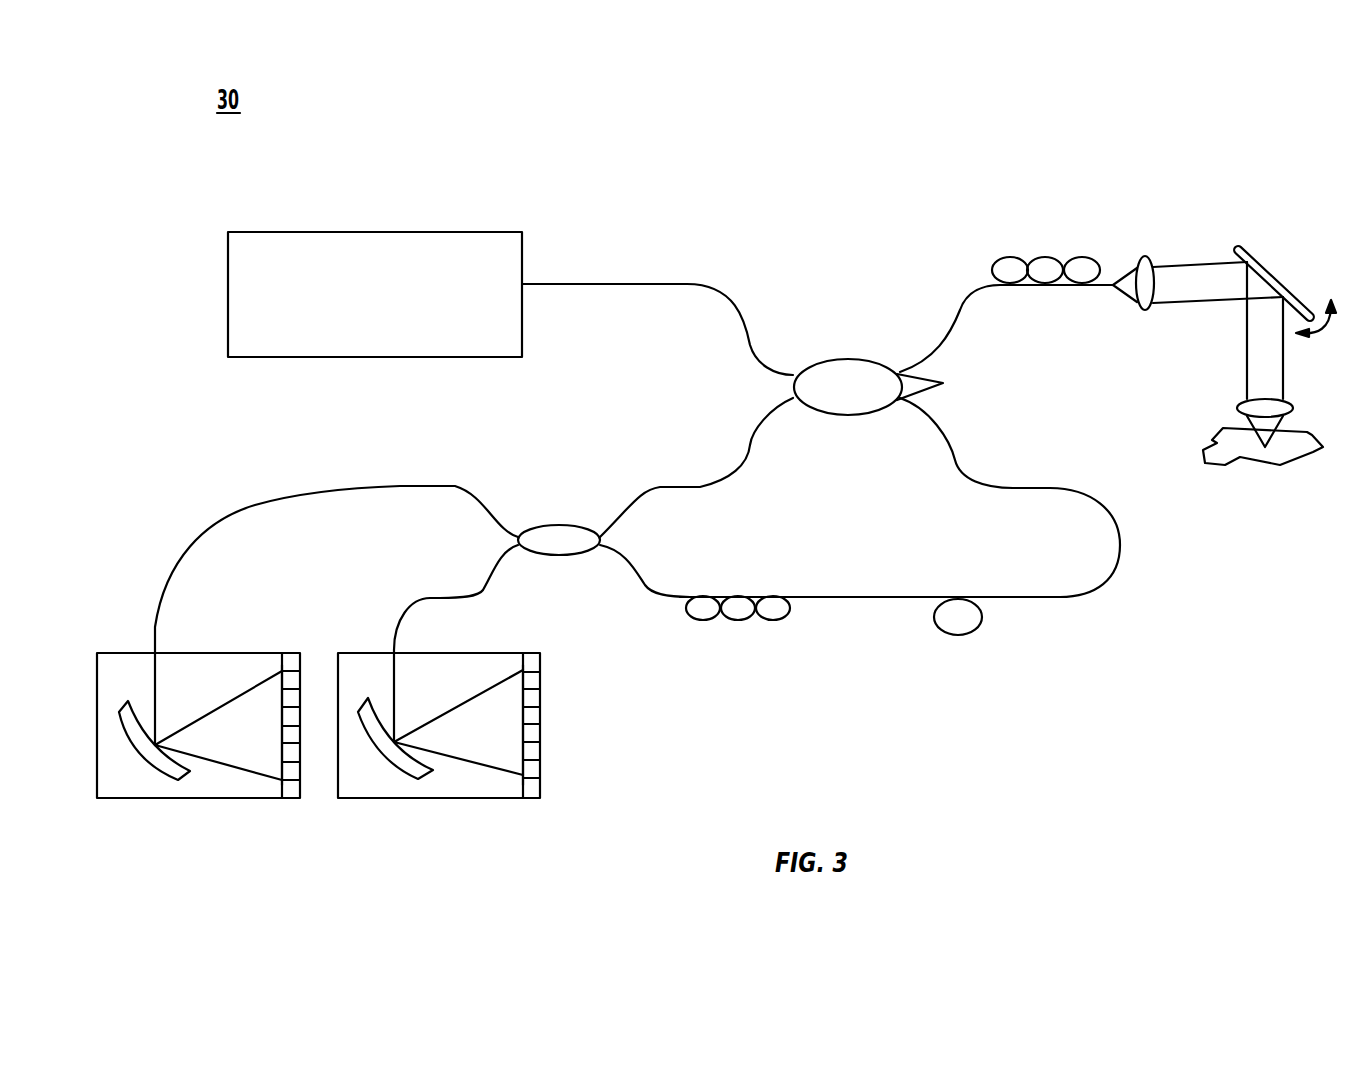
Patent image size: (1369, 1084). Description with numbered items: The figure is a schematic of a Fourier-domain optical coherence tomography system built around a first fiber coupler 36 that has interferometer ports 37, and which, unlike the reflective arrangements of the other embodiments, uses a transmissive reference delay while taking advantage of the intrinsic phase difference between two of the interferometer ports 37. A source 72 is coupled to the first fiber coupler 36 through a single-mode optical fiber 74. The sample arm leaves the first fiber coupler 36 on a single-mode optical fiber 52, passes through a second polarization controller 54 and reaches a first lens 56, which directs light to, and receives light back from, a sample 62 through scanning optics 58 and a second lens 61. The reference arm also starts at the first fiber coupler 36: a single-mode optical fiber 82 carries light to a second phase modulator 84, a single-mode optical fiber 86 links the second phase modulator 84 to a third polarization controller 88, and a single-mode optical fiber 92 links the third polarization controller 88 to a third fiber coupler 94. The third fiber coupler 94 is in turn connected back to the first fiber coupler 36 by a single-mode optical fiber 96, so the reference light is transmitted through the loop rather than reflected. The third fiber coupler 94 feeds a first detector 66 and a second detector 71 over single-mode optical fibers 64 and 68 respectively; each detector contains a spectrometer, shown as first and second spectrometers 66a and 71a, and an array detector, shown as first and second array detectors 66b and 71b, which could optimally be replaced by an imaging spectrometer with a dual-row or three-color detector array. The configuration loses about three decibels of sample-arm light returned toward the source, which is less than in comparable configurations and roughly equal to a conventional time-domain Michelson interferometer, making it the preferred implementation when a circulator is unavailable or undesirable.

The first fiber coupler 36 is at (847, 358).
The interferometer ports 37 is at (943, 383).
The SM optical fiber 52 is at (968, 302).
The second polarization controller 54 is at (1080, 257).
The first lens 56 is at (1143, 311).
The scanning optics 58 is at (1255, 262).
The second lens 61 is at (1290, 400).
The sample 62 is at (1295, 463).
The SM optical fiber 64 is at (1118, 280).
The first detector 66 is at (540, 703).
The first spectrometer 66a is at (400, 758).
The first array detector 66b is at (520, 773).
The SM optical fiber 68 is at (222, 518).
The second detector 71 is at (97, 735).
The second spectrometer 71a is at (126, 741).
The second array detector 71b is at (277, 761).
The source 72 is at (287, 232).
The source optical fiber 74 is at (549, 284).
The SM optical fiber 82 is at (980, 475).
The second phase modulator 84 is at (982, 620).
The SM optical fiber 86 is at (878, 598).
The third polarization controller 88 is at (707, 620).
The SM optical fiber 92 is at (632, 562).
The third fiber coupler 94 is at (580, 525).
The SM optical fiber 96 is at (750, 428).